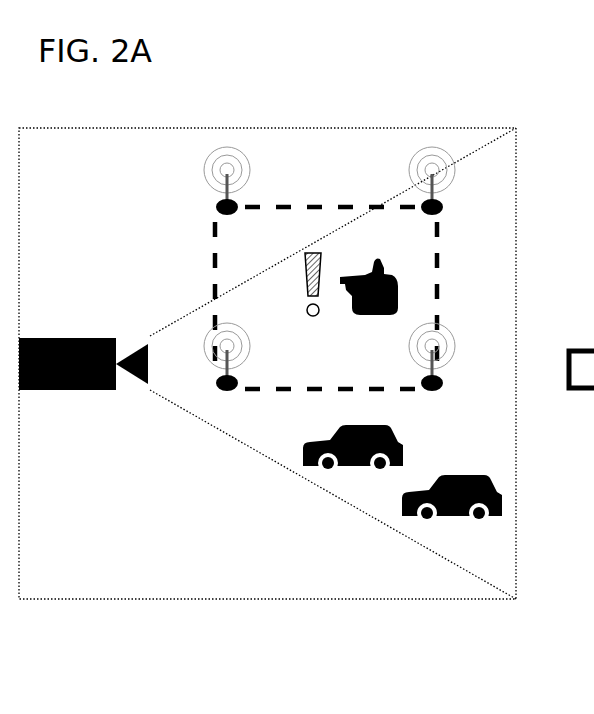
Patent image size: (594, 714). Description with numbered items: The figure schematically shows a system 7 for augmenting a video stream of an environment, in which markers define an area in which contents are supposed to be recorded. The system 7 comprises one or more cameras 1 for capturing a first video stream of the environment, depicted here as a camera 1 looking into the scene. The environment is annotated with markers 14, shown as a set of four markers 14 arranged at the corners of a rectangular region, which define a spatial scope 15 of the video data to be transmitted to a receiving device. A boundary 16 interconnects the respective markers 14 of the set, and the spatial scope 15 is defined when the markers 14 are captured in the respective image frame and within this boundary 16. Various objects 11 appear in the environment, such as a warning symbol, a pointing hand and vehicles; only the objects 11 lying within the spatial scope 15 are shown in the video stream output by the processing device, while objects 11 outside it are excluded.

The camera 1 is at (83, 343).
The system 7 is at (99, 262).
The objects 11 is at (362, 304).
The markers 14 is at (430, 205).
The spatial scope 15 is at (418, 264).
The boundary 16 is at (440, 277).